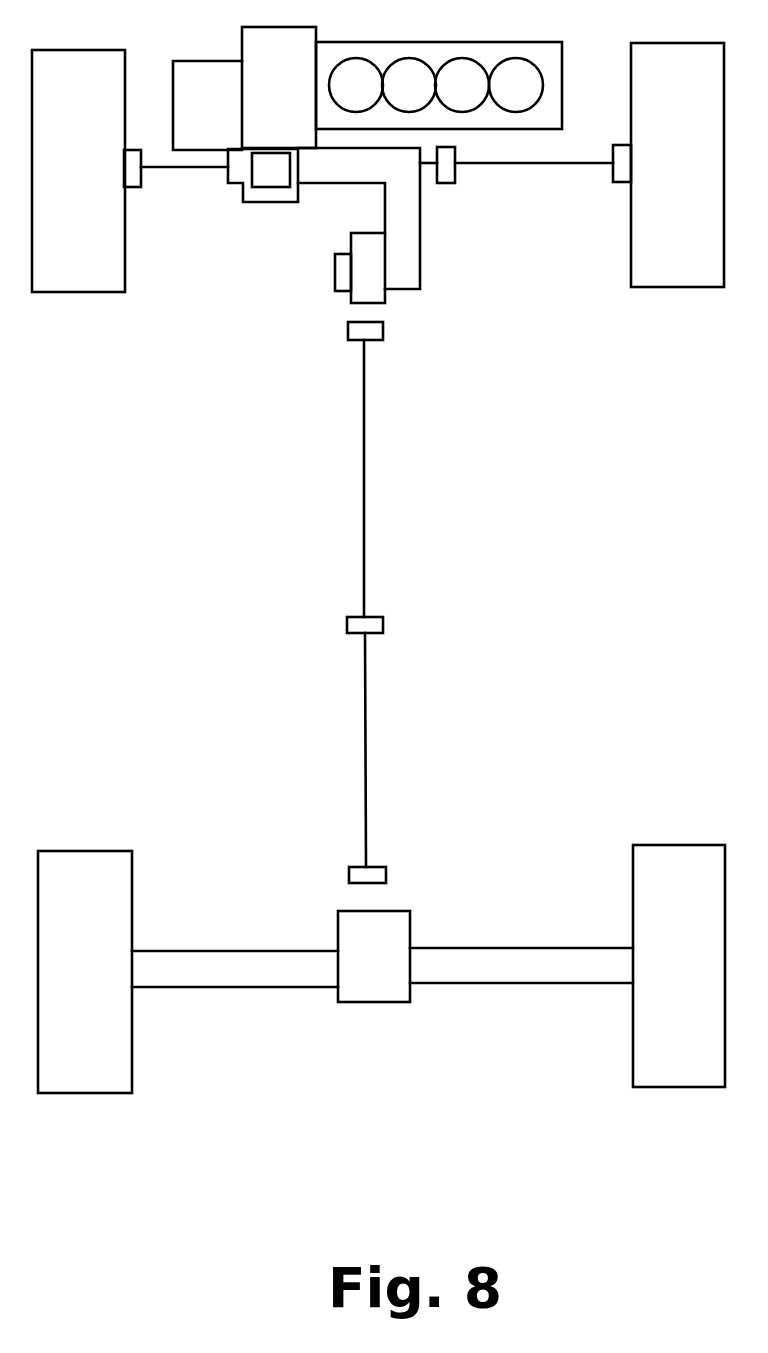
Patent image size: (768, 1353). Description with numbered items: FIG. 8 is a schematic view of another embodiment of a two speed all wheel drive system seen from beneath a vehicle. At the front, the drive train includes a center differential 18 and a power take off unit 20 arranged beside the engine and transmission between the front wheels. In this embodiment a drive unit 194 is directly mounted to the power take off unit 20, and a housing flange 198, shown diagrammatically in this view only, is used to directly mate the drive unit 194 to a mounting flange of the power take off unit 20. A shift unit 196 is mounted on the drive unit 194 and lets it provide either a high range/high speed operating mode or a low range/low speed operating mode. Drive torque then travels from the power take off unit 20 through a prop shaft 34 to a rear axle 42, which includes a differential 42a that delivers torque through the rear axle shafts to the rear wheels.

The center differential 18 is at (283, 190).
The power take off unit 20 is at (416, 230).
The housing flange 198 is at (387, 242).
The shift unit 196 is at (343, 272).
The drive unit 194 is at (365, 290).
The prop shaft 34 is at (364, 565).
The rear axle 42 is at (355, 987).
The differential 42a is at (377, 963).